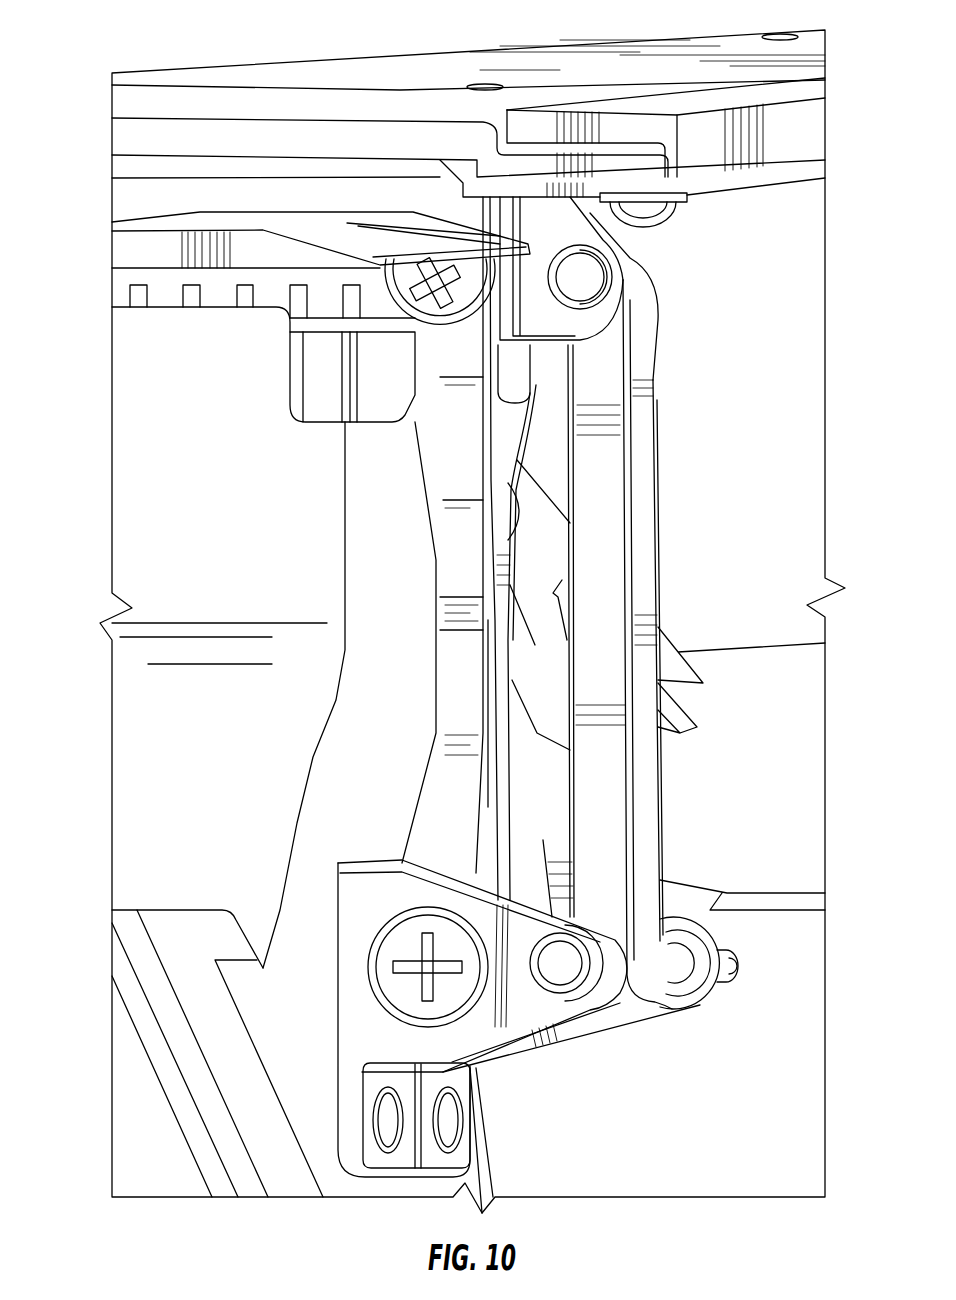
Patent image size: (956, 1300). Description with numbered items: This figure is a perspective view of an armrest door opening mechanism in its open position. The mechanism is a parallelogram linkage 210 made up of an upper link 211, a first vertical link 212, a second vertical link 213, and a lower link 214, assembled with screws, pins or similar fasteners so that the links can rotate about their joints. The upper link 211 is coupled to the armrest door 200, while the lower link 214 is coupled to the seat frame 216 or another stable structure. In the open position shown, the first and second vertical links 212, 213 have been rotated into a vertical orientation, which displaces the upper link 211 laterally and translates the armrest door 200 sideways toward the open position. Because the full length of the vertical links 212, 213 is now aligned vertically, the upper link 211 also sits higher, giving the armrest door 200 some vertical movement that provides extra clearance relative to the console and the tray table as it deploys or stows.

The armrest door 200 is at (412, 79).
The parallelogram linkage 210 is at (592, 1044).
The upper link 211 is at (567, 237).
The first vertical link 212 is at (640, 423).
The second vertical link 213 is at (497, 602).
The lower link 214 is at (697, 997).
The seat frame 216 is at (282, 1058).